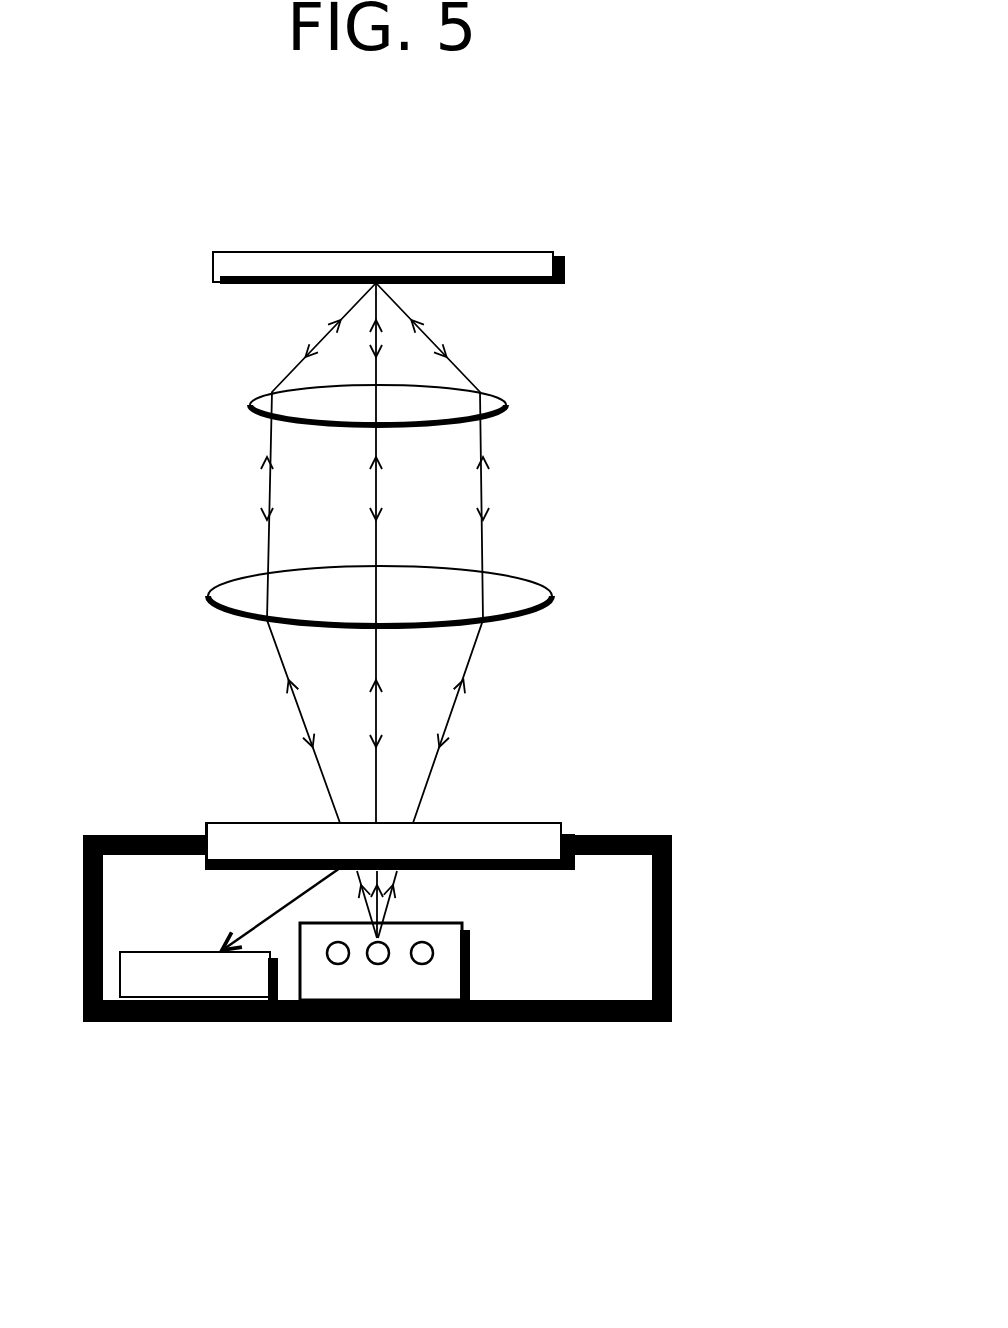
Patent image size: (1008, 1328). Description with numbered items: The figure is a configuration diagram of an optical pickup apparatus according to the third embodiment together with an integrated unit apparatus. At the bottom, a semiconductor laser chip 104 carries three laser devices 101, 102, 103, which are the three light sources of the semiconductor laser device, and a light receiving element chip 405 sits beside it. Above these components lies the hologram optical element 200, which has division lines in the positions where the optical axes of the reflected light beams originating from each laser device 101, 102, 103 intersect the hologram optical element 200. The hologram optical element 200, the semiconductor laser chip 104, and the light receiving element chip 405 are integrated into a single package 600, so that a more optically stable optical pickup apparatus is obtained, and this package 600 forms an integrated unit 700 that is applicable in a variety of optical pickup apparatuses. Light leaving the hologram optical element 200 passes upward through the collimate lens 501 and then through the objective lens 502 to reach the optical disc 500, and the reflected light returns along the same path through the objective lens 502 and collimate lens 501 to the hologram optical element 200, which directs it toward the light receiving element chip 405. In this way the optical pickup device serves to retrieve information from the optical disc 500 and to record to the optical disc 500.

The laser device 101 is at (335, 964).
The laser device 102 is at (378, 964).
The laser device 103 is at (421, 964).
The semiconductor laser chip 104 is at (447, 982).
The hologram optical element 200 is at (540, 832).
The light receiving element chip 405 is at (118, 1022).
The optical disc 500 is at (290, 252).
The collimate lens 501 is at (527, 592).
The objective lens 502 is at (502, 400).
The package 600 is at (597, 1022).
The integrated unit 700 is at (468, 947).